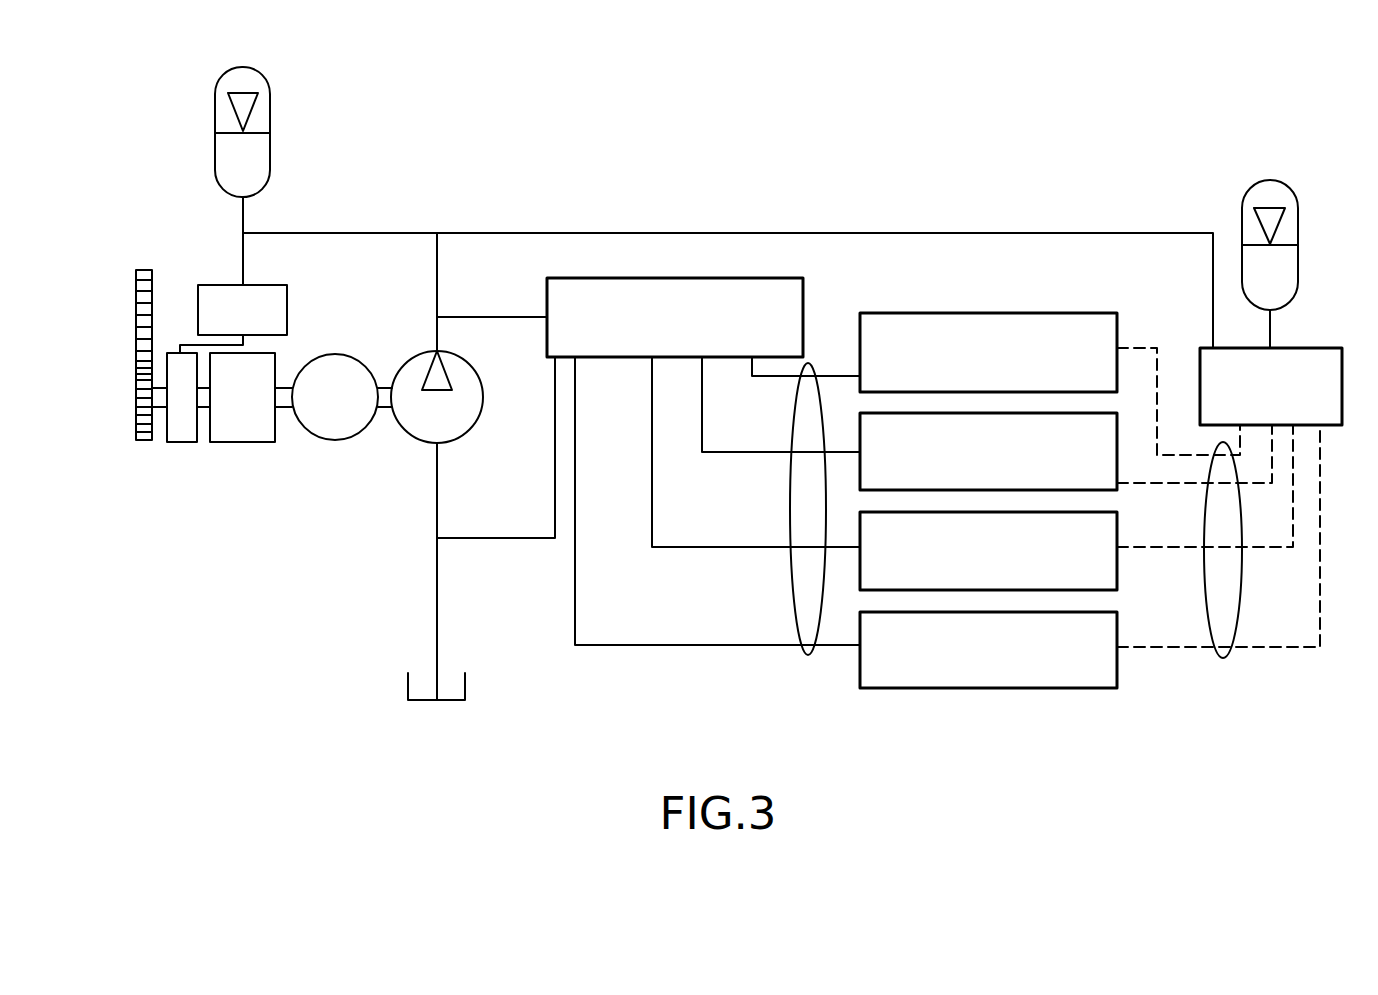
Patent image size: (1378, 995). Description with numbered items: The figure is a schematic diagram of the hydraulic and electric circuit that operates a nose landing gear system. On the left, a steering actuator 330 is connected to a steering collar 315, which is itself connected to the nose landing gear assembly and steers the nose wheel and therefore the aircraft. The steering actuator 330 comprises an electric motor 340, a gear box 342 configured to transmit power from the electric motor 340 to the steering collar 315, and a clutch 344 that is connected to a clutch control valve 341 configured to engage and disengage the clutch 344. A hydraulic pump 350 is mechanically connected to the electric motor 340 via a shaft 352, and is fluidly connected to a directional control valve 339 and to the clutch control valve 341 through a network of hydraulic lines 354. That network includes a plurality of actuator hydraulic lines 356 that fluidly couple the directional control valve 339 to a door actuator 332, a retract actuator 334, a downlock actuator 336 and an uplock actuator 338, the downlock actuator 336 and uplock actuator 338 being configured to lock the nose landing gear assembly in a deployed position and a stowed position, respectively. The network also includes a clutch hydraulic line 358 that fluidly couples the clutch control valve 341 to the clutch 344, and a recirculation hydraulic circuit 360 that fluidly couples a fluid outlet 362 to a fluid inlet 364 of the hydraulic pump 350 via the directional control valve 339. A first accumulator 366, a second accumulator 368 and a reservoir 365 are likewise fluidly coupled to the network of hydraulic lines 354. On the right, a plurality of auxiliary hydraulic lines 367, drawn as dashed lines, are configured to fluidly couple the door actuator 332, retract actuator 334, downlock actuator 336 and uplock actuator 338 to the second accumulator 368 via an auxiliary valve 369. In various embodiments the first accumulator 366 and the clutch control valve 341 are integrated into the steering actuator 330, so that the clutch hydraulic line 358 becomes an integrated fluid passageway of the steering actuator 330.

The steering collar 315 is at (136, 337).
The steering actuator 330 is at (185, 310).
The door actuator 332 is at (1117, 323).
The retract actuator 334 is at (1117, 620).
The downlock actuator 336 is at (1117, 527).
The uplock actuator 338 is at (1117, 468).
The directional control valve 339 is at (805, 290).
The electric motor 340 is at (335, 430).
The clutch control valve 341 is at (287, 297).
The gear box 342 is at (245, 430).
The clutch 344 is at (179, 430).
The hydraulic pump 350 is at (455, 430).
The shaft 352 is at (383, 398).
The network of hydraulic lines 354 is at (482, 225).
The actuator hydraulic lines 356 is at (795, 660).
The clutch hydraulic line 358 is at (243, 343).
The recirculation hydraulic circuit 360 is at (485, 538).
The fluid outlet 362 is at (440, 335).
The fluid inlet 364 is at (437, 517).
The reservoir 365 is at (466, 683).
The first accumulator 366 is at (270, 103).
The auxiliary hydraulic lines 367 is at (1228, 650).
The second accumulator 368 is at (1290, 180).
The auxiliary valve 369 is at (1328, 348).